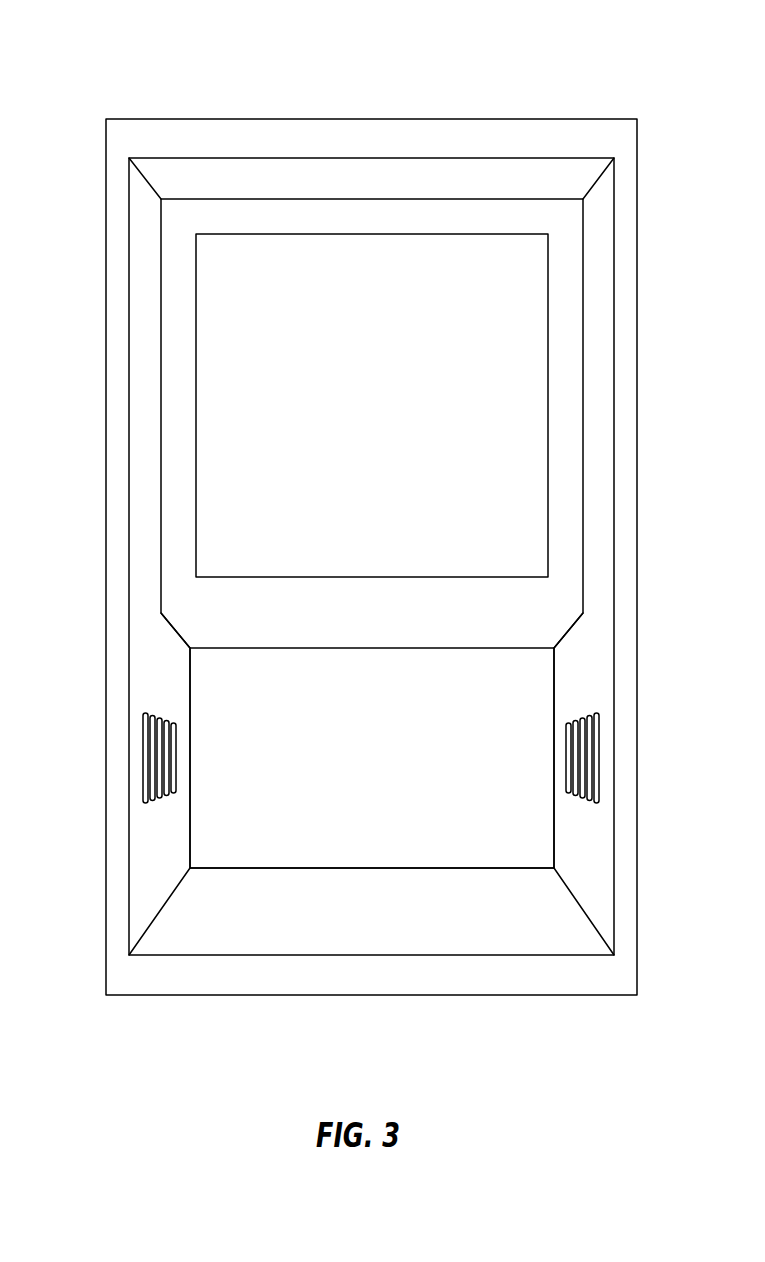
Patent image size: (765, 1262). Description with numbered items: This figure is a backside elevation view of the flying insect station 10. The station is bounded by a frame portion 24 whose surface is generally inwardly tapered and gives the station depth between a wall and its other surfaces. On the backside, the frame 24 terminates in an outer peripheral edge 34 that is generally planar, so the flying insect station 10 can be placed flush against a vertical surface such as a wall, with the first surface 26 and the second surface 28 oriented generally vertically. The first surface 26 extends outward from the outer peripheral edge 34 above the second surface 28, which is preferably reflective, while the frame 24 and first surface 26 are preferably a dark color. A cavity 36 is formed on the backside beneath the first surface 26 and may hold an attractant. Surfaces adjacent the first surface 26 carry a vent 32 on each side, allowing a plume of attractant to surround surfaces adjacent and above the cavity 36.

The flying insect station 10 is at (629, 59).
The outer peripheral edge 34 is at (627, 141).
The frame portion 24 is at (200, 182).
The second surface 28 is at (385, 405).
The first surface 26 is at (365, 766).
The cavity 36 is at (490, 687).
The vent 32 is at (174, 742).